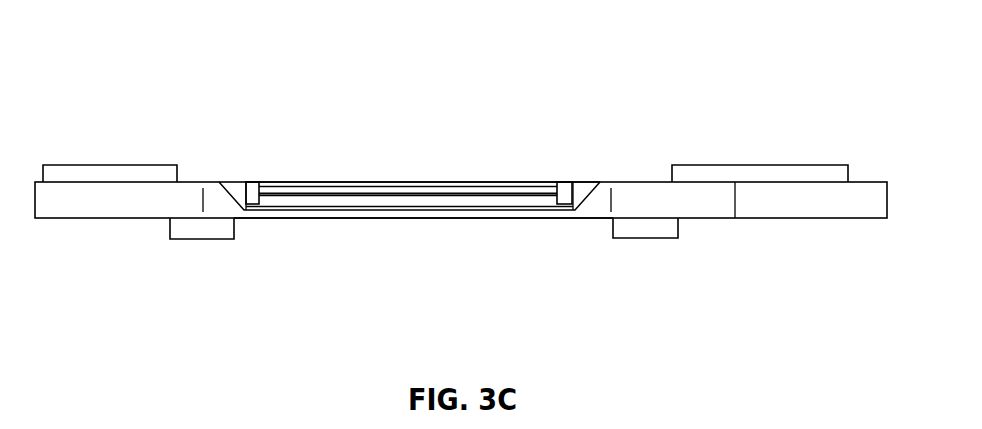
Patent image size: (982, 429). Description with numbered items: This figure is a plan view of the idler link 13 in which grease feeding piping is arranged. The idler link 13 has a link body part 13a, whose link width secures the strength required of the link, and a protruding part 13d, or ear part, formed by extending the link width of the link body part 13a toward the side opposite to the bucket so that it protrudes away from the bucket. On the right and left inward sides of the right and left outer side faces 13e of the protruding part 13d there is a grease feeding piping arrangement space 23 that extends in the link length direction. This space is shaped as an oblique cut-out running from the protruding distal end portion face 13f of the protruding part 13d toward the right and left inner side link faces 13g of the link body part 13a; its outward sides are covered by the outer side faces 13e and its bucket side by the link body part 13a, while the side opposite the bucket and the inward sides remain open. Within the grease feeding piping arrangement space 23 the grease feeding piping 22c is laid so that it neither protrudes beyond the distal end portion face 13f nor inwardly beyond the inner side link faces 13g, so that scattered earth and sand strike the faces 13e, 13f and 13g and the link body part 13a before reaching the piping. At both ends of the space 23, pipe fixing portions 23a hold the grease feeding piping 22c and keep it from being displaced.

The idler link 13 is at (311, 113).
The link body part 13a is at (508, 181).
The protruding part 13d is at (335, 218).
The right and left outer side faces 13e is at (507, 218).
The protruding distal end portion face 13f is at (418, 218).
The right and left inner side link faces 13g is at (417, 187).
The grease feeding piping 22c is at (465, 191).
The grease feeding piping arrangement space 23 is at (378, 190).
The pipe fixing portions 23a is at (253, 197).